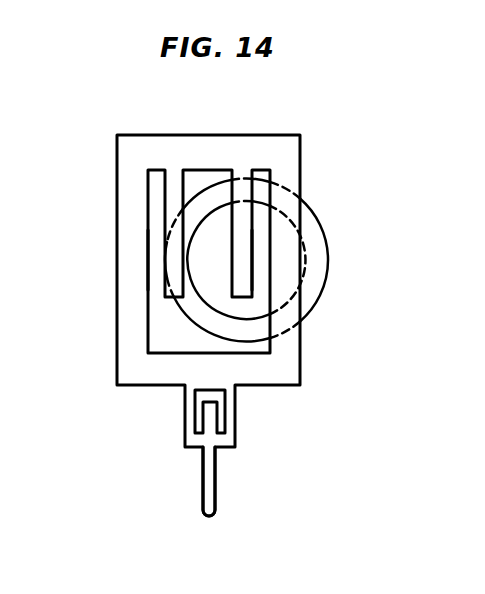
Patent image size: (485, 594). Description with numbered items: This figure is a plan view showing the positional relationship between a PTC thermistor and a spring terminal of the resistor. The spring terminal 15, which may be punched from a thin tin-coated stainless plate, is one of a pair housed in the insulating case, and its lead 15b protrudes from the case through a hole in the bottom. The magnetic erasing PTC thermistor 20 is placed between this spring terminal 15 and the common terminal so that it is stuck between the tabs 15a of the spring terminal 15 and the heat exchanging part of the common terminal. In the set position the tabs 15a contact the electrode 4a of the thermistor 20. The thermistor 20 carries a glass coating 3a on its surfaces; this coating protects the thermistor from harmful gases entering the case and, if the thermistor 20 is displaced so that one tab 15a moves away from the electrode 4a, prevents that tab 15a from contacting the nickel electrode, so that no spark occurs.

The spring terminal 15 is at (193, 132).
The tabs 15a is at (173, 273).
The lead 15b is at (215, 474).
The magnetic erasing PTC thermistor 20 is at (321, 206).
The glass coating 3a is at (320, 257).
The electrode 4a is at (215, 298).